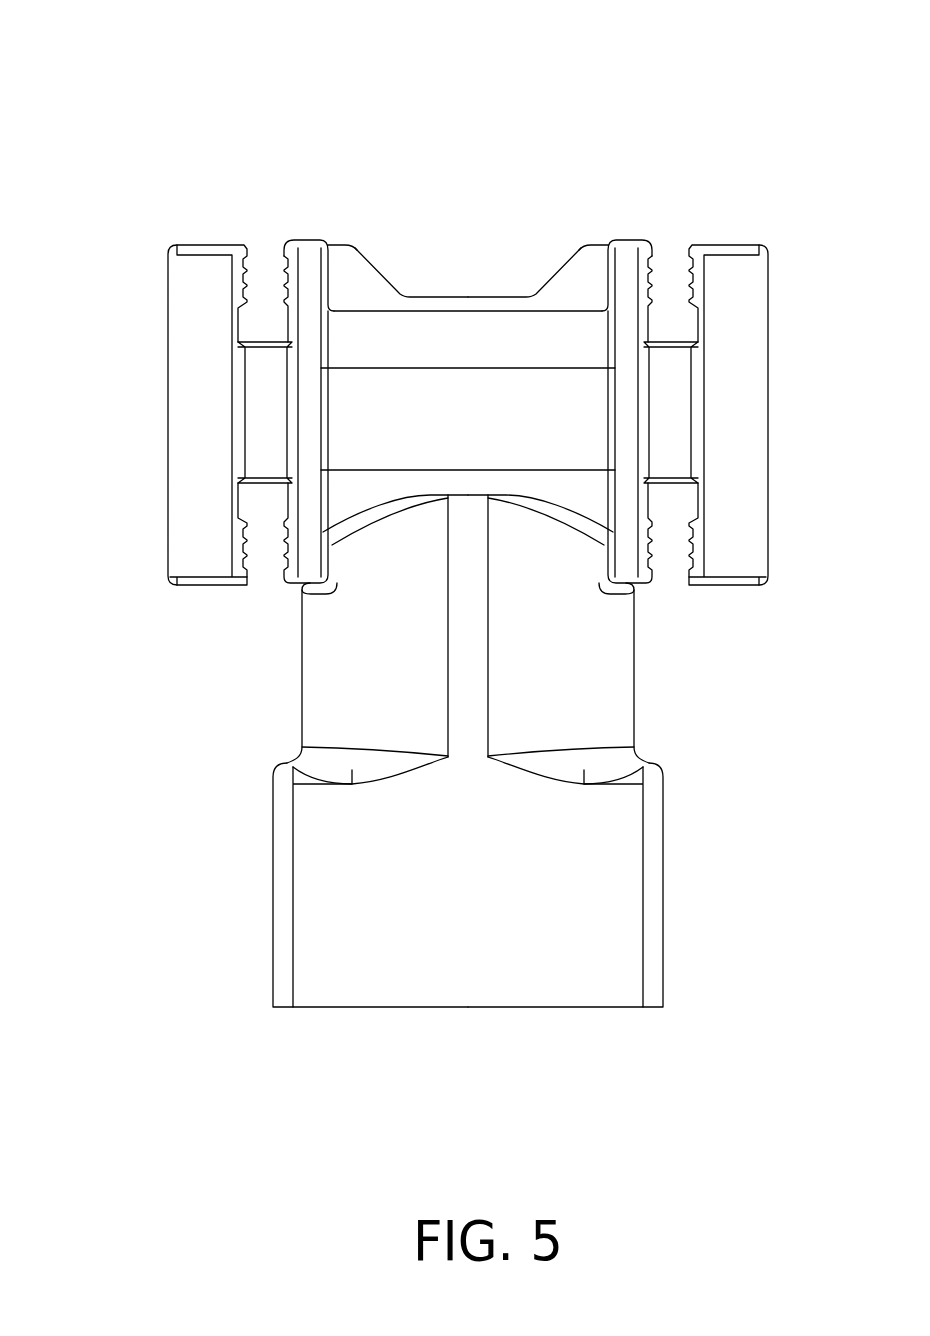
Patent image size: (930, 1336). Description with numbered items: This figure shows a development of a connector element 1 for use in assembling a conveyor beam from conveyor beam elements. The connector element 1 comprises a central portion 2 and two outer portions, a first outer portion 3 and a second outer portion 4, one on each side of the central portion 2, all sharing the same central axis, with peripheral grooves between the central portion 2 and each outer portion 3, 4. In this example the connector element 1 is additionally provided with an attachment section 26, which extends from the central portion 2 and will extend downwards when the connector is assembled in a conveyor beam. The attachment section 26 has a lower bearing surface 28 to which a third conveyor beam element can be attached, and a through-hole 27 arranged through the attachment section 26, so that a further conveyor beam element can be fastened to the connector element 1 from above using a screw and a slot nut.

The connector element 1 is at (723, 70).
The central portion 2 is at (360, 343).
The first outer portion 3 is at (145, 240).
The second outer portion 4 is at (792, 242).
The attachment section 26 is at (572, 663).
The through-hole 27 is at (478, 280).
The lower bearing surface 28 is at (562, 1010).